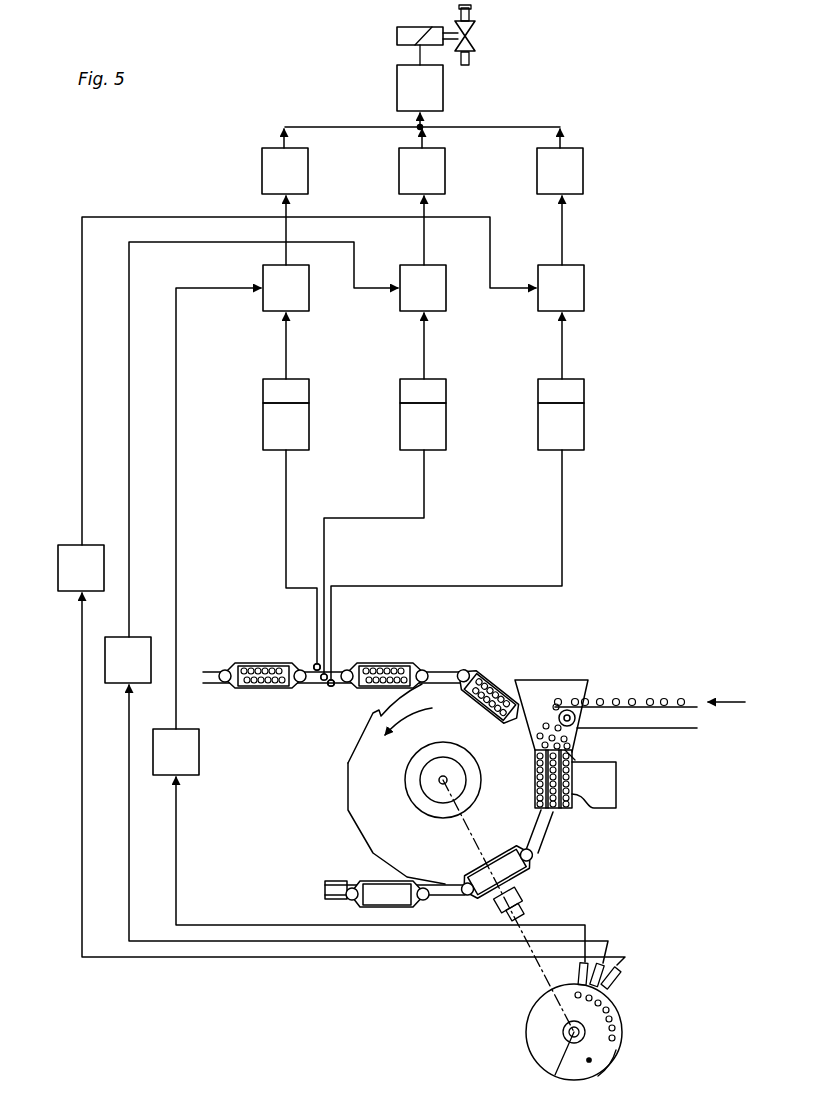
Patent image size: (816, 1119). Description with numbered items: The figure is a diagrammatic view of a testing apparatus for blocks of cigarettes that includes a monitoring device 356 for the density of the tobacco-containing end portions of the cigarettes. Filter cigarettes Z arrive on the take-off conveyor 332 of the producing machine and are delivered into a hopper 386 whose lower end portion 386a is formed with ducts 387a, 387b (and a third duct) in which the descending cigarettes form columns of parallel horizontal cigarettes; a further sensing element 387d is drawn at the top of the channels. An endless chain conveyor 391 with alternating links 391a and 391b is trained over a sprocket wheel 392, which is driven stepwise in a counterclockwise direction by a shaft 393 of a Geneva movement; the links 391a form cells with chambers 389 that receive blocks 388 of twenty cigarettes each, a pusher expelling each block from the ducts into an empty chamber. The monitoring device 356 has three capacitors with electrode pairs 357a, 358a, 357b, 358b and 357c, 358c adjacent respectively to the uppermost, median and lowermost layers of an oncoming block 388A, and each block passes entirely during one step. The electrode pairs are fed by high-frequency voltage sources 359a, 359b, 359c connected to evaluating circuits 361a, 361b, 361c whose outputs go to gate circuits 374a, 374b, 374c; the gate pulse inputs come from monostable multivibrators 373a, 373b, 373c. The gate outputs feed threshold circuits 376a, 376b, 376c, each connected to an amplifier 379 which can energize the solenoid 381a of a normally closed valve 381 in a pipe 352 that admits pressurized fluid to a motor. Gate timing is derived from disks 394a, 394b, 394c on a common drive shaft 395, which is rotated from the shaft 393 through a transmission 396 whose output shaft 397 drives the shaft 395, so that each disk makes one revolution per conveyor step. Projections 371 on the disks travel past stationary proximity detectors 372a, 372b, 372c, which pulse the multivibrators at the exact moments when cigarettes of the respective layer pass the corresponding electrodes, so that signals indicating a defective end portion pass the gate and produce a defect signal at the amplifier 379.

The normally closed valve 381 is at (441, 34).
The solenoid 381a is at (397, 36).
The pipe 352 is at (470, 22).
The amplifier 379 is at (443, 90).
The threshold circuit 376a is at (262, 170).
The threshold circuit 376b is at (399, 175).
The threshold circuit 376c is at (537, 175).
The gate circuit 374a is at (282, 302).
The gate circuit 374b is at (420, 300).
The gate circuit 374c is at (560, 300).
The evaluating circuit 361a is at (276, 390).
The evaluating circuit 361b is at (413, 390).
The evaluating circuit 361c is at (552, 390).
The source of high-frequency voltage 359a is at (278, 440).
The source of high-frequency voltage 359b is at (412, 440).
The source of high-frequency voltage 359c is at (557, 440).
The monostable multivibrator 373a is at (190, 762).
The monostable multivibrator 373b is at (118, 672).
The monostable multivibrator 373c is at (66, 562).
The electrode 357a is at (315, 664).
The electrode 357b is at (322, 680).
The electrode 357c is at (328, 688).
The electrode 358a is at (317, 667).
The electrode 358b is at (324, 677).
The electrode 358c is at (331, 683).
The monitoring device 356 is at (334, 696).
The block 388A is at (395, 655).
The block of cigarettes 388 is at (492, 680).
The hopper 386 is at (588, 698).
The lower end portion 386a is at (592, 808).
The duct 387a is at (530, 770).
The duct 387b is at (549, 790).
The sensor 387d is at (576, 758).
The take-off conveyor 332 is at (698, 732).
The filter cigarettes Z is at (655, 698).
The sprocket wheel 392 is at (388, 784).
The shaft 393 is at (436, 792).
The endless chain conveyor 391 is at (452, 898).
The link 391a is at (386, 910).
The link 391b is at (440, 905).
The chamber 389 is at (483, 876).
The transmission 396 is at (522, 900).
The output shaft 397 is at (540, 965).
The proximity detector 372a is at (590, 962).
The proximity detector 372b is at (603, 964).
The proximity detector 372c is at (622, 978).
The projections 371 is at (617, 1025).
The disk 394a is at (590, 1061).
The disk 394b is at (620, 1056).
The disk 394c is at (622, 1040).
The drive shaft 395 is at (555, 1076).